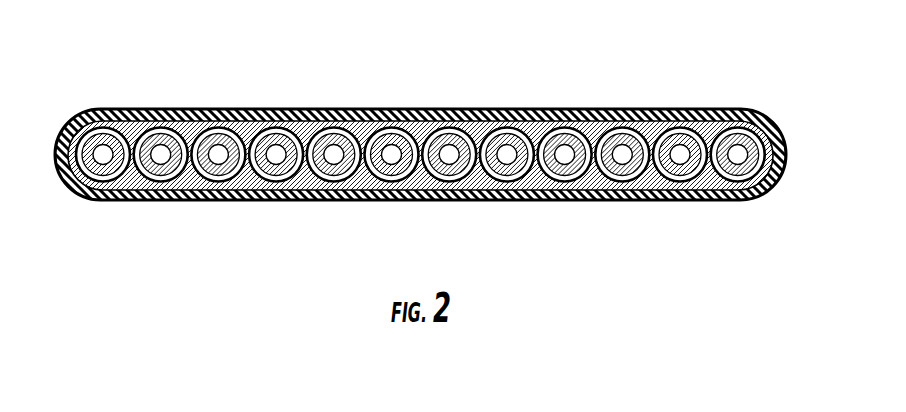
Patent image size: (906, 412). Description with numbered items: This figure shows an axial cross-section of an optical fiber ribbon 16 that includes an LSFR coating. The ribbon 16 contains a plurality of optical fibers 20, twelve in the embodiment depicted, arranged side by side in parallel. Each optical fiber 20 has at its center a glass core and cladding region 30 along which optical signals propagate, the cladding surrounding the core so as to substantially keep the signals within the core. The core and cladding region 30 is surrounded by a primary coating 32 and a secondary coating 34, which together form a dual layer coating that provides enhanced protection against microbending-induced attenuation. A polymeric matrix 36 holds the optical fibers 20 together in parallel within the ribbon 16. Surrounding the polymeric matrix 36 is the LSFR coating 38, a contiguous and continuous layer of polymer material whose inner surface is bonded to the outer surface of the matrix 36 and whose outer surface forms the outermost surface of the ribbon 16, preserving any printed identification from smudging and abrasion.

The optical fiber ribbon 16 is at (420, 129).
The optical fibers 20 is at (250, 127).
The core and cladding region 30 is at (384, 150).
The primary coating 32 is at (360, 125).
The secondary coating 34 is at (404, 127).
The polymeric matrix 36 is at (470, 118).
The LSFR coating 38 is at (548, 103).